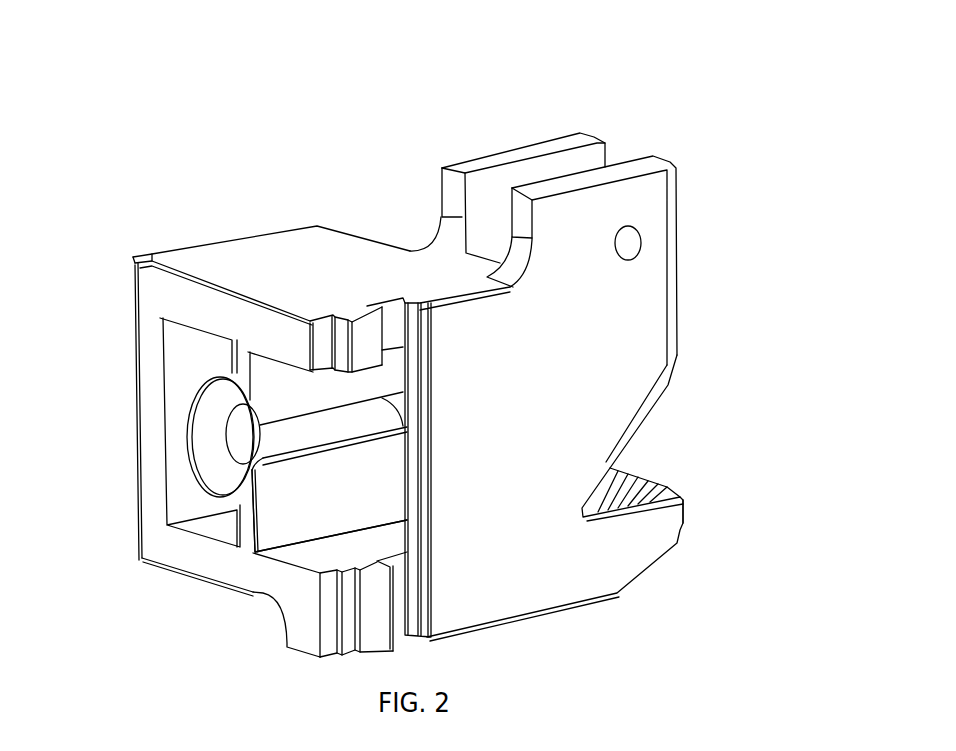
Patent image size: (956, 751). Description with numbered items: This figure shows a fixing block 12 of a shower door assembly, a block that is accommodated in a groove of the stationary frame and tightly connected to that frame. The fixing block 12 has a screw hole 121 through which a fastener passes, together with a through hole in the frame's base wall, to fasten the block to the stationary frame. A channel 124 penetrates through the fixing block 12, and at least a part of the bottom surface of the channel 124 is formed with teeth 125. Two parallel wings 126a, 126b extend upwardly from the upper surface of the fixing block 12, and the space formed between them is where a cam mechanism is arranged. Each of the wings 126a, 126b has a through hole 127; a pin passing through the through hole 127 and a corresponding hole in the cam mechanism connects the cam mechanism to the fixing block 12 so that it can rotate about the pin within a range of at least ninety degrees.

The fixing block 12 is at (105, 102).
The screw hole 121 is at (213, 452).
The channel 124 is at (343, 542).
The teeth 125 is at (653, 477).
The first wing 126a is at (540, 150).
The second wing 126b is at (633, 167).
The through hole 127 is at (620, 243).